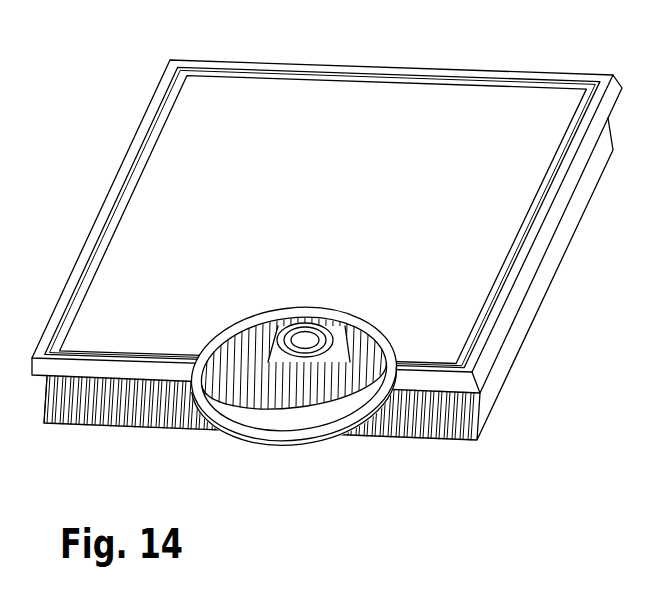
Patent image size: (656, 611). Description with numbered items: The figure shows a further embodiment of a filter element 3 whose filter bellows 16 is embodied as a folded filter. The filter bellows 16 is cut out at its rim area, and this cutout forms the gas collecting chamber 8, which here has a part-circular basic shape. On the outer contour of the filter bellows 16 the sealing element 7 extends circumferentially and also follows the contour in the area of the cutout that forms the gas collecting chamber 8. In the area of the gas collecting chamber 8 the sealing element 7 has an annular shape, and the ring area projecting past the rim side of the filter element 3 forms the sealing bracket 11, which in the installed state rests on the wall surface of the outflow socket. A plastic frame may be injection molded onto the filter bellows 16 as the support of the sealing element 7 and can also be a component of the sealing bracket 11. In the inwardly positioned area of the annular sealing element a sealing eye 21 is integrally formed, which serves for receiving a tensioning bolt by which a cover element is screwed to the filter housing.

The filter element 3 is at (321, 282).
The sealing element 7 is at (171, 355).
The filter bellows 16 is at (58, 424).
The gas collecting chamber 8 is at (294, 391).
The sealing bracket 11 is at (270, 441).
The sealing eye 21 is at (308, 336).